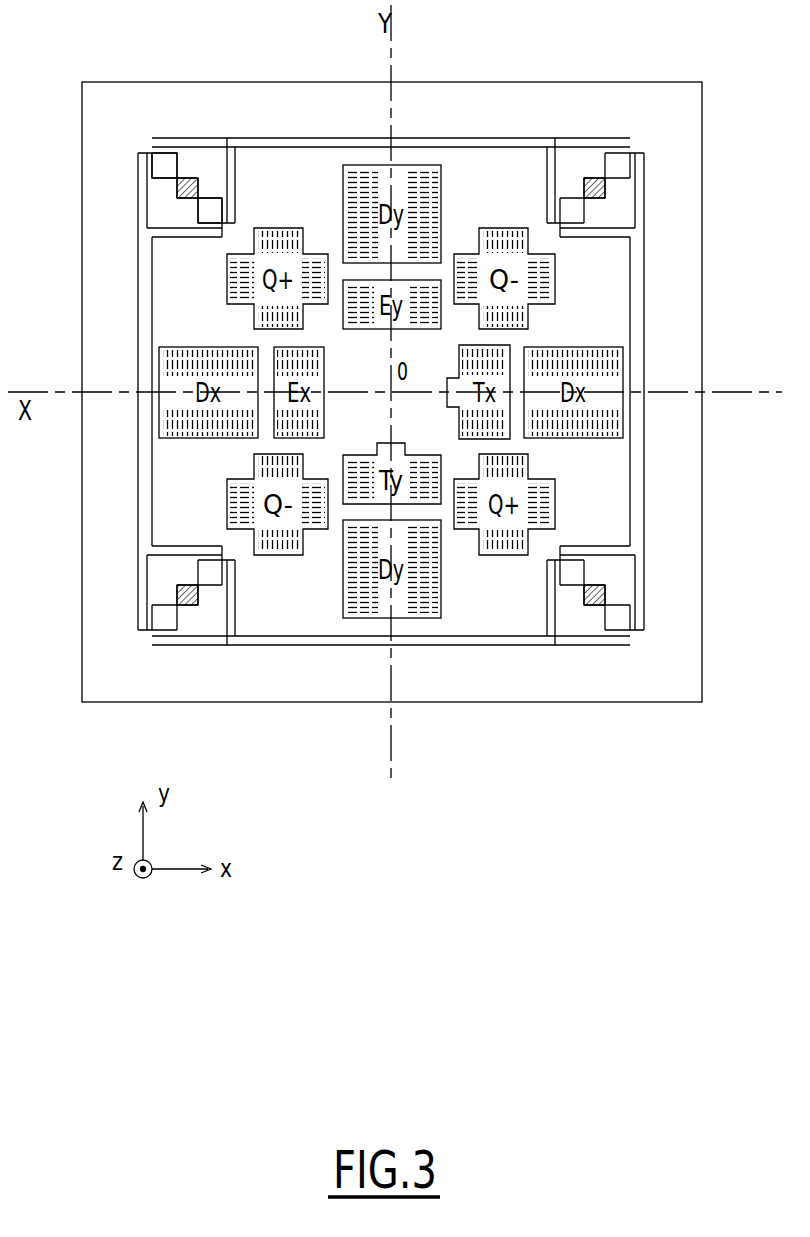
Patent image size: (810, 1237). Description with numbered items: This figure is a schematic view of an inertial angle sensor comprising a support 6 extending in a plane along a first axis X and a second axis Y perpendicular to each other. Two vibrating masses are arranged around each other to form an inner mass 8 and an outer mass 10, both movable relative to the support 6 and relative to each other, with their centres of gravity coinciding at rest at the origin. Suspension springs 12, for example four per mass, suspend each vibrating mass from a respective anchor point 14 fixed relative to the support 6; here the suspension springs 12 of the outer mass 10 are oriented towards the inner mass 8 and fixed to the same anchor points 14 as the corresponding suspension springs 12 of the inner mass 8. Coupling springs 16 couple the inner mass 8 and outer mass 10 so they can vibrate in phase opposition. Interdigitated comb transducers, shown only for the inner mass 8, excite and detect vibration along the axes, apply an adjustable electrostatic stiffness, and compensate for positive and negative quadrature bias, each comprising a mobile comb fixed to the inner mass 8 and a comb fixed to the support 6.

The support 6 is at (568, 162).
The inner mass 8 is at (483, 162).
The outer mass 10 is at (703, 133).
The suspension springs 12 is at (181, 160).
The anchor point 14 is at (204, 196).
The coupling springs 16 is at (145, 208).